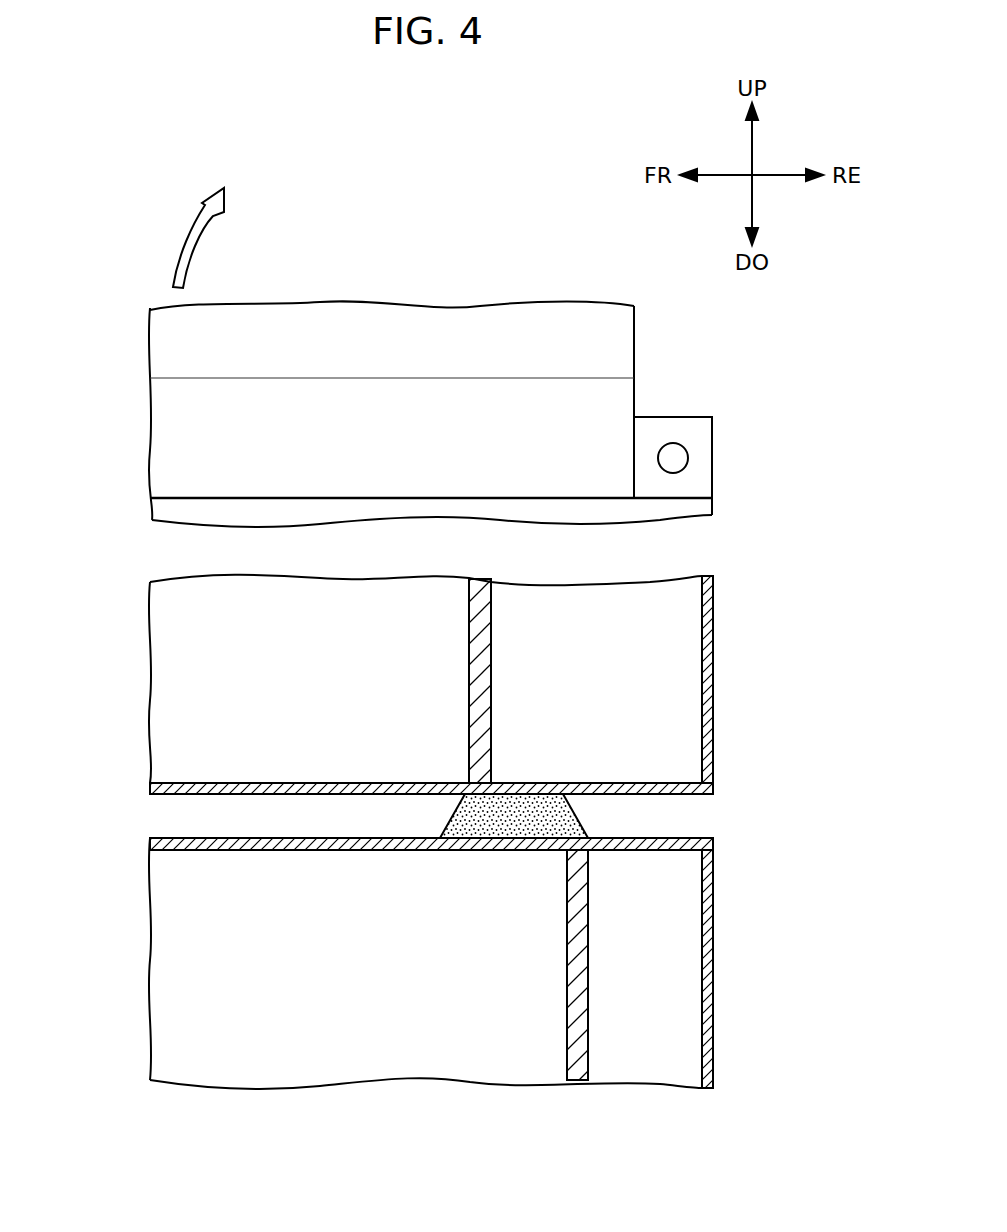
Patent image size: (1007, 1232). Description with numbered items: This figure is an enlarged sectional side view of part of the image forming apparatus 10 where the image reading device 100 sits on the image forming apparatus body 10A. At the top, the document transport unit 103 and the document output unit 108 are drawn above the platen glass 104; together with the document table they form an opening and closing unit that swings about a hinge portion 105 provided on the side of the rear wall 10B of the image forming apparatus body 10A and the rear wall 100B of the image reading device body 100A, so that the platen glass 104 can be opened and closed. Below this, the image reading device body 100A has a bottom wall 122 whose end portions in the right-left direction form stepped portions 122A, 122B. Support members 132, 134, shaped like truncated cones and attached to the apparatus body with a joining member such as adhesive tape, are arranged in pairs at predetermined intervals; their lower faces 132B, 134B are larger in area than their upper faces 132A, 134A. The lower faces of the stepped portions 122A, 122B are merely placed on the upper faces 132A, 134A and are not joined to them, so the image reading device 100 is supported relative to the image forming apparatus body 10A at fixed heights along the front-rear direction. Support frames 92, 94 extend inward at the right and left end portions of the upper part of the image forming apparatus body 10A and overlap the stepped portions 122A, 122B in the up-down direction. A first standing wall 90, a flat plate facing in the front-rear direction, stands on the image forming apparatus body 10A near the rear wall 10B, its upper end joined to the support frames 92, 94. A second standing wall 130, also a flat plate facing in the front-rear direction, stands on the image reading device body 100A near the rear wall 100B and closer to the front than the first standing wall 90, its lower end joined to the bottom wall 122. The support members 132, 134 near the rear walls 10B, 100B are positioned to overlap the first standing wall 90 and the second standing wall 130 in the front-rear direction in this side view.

The image forming apparatus 10 is at (434, 700).
The image forming apparatus body 10A is at (183, 963).
The rear wall 10B is at (712, 917).
The first standing wall 90 is at (580, 970).
The support frame 92 is at (183, 838).
The support frame 94 is at (367, 840).
The image reading device 100 is at (466, 687).
The image reading device body 100A is at (183, 652).
The rear wall 100B is at (713, 662).
The document transport unit 103 is at (422, 320).
The platen glass 104 is at (208, 498).
The hinge portion 105 is at (675, 459).
The document output unit 108 is at (208, 378).
The bottom wall 122 is at (190, 792).
The stepped portion 122A is at (680, 806).
The stepped portion 122B is at (660, 795).
The second standing wall 130 is at (480, 673).
The support member 132 is at (560, 800).
The upper face 132A is at (527, 797).
The lower face 132B is at (497, 850).
The support member 134 is at (550, 802).
The upper face 134A is at (554, 739).
The lower face 134B is at (512, 880).